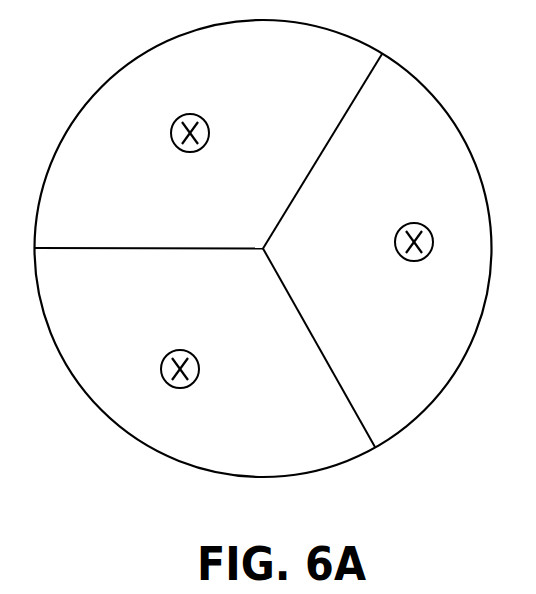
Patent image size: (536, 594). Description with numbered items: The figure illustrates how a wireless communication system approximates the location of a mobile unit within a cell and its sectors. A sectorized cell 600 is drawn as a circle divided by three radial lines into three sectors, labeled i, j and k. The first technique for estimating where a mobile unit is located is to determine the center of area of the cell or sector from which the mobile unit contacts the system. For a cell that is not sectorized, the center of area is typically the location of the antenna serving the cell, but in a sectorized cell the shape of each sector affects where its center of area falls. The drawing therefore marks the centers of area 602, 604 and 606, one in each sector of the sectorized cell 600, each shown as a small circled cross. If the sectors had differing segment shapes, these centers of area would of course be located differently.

The sectorized cell 600 is at (117, 72).
The center of area 602 is at (203, 120).
The center of area 604 is at (193, 355).
The center of area 606 is at (404, 226).